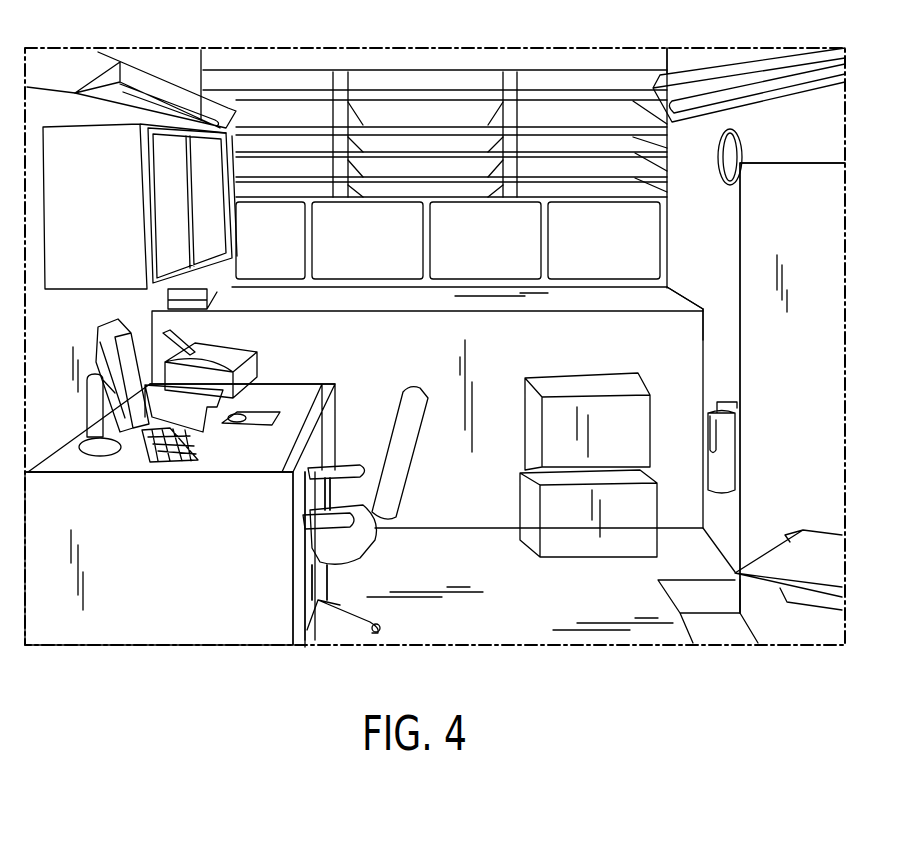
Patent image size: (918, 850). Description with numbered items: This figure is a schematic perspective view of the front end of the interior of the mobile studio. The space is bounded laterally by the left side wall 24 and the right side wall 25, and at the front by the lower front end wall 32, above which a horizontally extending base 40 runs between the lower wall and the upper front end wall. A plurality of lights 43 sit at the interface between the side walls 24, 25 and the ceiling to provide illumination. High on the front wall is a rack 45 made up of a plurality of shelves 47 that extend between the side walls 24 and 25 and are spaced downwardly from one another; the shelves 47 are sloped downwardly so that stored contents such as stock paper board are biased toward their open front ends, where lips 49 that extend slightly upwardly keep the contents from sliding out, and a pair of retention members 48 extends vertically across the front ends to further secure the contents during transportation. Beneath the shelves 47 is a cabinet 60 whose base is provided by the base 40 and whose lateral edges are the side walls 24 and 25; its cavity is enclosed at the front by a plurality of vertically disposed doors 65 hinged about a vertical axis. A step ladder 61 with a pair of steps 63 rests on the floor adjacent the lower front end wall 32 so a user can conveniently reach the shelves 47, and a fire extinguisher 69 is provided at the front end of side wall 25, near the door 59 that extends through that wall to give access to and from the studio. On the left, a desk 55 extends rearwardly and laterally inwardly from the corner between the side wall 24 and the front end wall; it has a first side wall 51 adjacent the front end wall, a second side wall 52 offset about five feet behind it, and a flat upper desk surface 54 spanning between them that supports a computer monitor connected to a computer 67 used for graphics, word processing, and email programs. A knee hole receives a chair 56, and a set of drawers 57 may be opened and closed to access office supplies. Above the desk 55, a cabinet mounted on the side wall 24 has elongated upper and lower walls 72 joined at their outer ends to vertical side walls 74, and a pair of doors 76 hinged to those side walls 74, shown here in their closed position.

The side wall 24 is at (164, 386).
The side wall 25 is at (775, 135).
The lower front end wall 32 is at (428, 352).
The base 40 is at (687, 298).
The lights 43 is at (145, 90).
The rack 45 is at (459, 145).
The shelves 47 is at (667, 147).
The retention members 48 is at (350, 192).
The lips 49 is at (605, 180).
The first side wall 51 is at (201, 487).
The second side wall 52 is at (152, 568).
The upper desk surface 54 is at (268, 465).
The desk 55 is at (148, 615).
The chair 56 is at (362, 553).
The set of drawers 57 is at (38, 495).
The door 59 is at (793, 180).
The cabinet 60 is at (486, 240).
The step ladder 61 is at (568, 492).
The steps 63 is at (548, 475).
The doors 65 is at (297, 270).
The computer 67 is at (198, 437).
The fire extinguisher 69 is at (733, 448).
The upper and lower walls 72 is at (167, 121).
The side walls 74 is at (155, 178).
The doors 76 is at (158, 217).